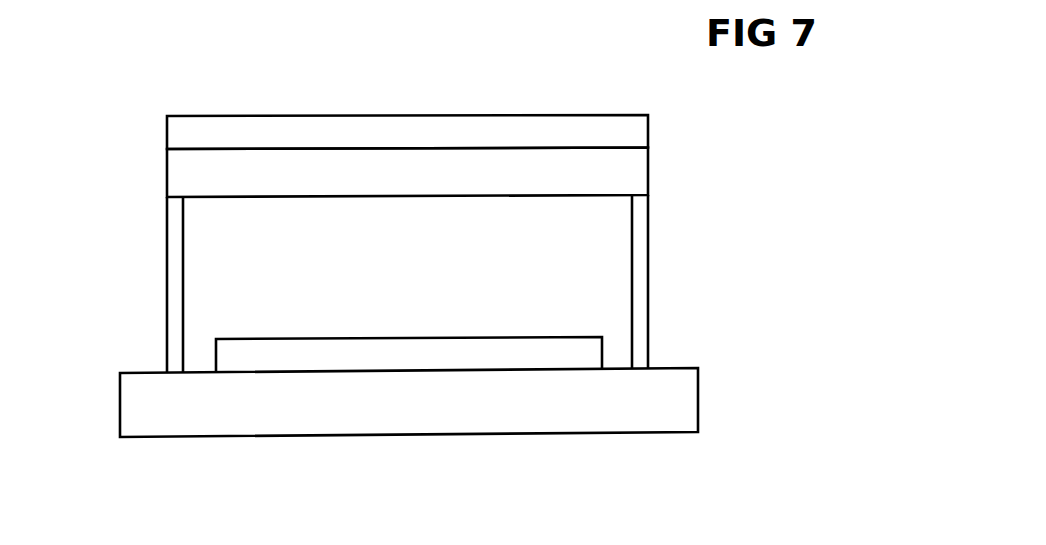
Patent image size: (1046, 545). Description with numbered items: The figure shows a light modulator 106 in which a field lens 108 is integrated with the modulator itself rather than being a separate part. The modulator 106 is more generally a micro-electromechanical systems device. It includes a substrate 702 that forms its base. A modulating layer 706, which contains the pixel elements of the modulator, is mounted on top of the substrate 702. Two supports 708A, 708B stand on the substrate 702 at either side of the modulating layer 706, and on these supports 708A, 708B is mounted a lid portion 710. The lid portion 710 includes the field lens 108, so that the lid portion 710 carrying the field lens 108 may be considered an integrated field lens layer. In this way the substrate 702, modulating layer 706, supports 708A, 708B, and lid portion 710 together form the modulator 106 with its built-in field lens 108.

The modulator 106 is at (107, 127).
The field lens 108 is at (650, 129).
The substrate 702 is at (700, 393).
The modulating layer 706 is at (428, 338).
The support 708A is at (167, 270).
The support 708B is at (650, 264).
The lid portion 710 is at (650, 177).